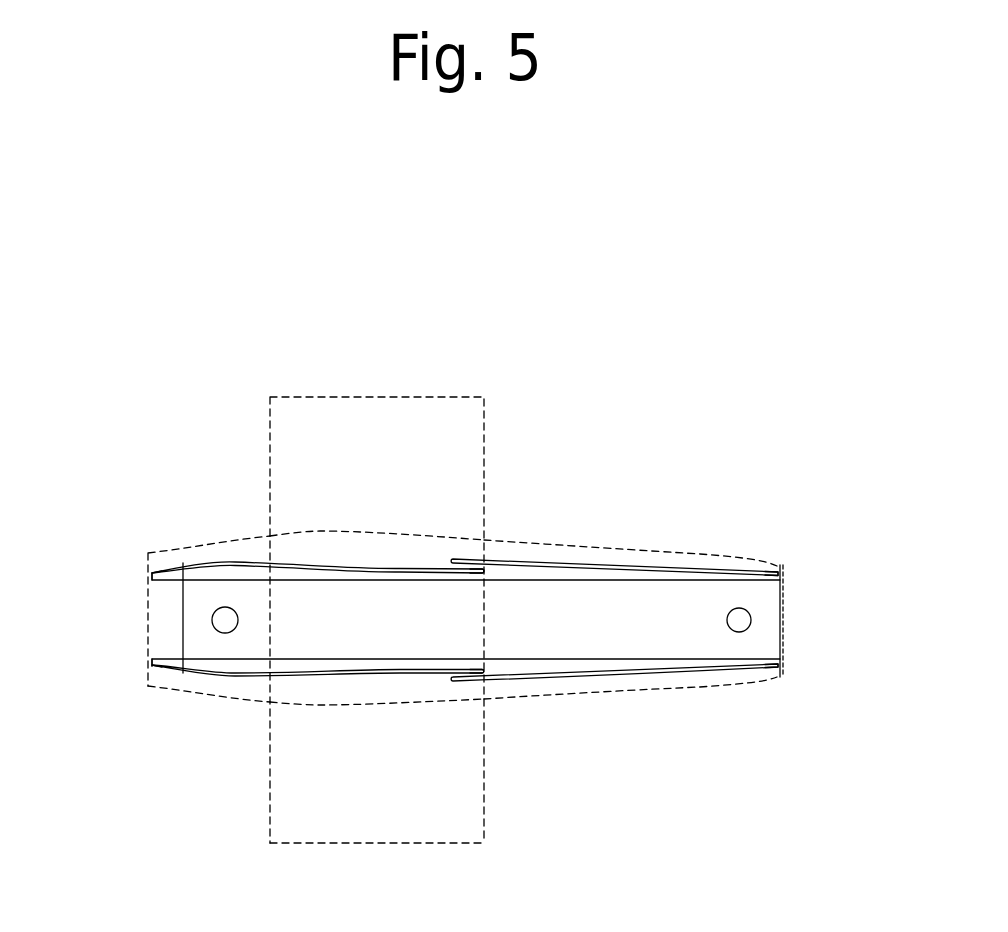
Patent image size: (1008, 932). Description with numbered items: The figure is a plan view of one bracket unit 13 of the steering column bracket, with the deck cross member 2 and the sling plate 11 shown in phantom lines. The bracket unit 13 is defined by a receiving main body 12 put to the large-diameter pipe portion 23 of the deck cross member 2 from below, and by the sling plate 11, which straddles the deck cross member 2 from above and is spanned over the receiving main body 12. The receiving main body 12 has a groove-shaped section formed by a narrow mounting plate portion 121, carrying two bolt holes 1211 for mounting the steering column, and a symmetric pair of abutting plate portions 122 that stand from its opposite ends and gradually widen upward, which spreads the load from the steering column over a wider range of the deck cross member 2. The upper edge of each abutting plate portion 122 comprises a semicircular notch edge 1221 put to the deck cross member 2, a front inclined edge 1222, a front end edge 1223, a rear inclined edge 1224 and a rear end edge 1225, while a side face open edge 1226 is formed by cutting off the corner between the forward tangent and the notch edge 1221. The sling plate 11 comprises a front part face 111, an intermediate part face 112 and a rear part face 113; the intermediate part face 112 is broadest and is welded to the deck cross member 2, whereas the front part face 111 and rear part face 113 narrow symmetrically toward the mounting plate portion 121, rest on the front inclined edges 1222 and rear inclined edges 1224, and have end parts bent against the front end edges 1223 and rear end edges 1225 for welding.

The deck cross member 2 is at (430, 662).
The large-diameter pipe portion 23 is at (325, 843).
The sling plate 11 is at (415, 605).
The front part face 111 is at (210, 547).
The intermediate part face 112 is at (322, 532).
The rear part face 113 is at (565, 545).
The bracket unit 13 is at (234, 715).
The receiving main body 12 is at (472, 620).
The mounting plate portion 121 is at (768, 637).
The bolt hole 1211 is at (212, 620).
The abutting plate portion 122 is at (472, 620).
The notch edge 1221 is at (406, 567).
The front inclined edge 1222 is at (264, 620).
The front end edge 1223 is at (150, 574).
The rear inclined edge 1224 is at (675, 624).
The rear end edge 1225 is at (777, 568).
The side face open edge 1226 is at (243, 565).